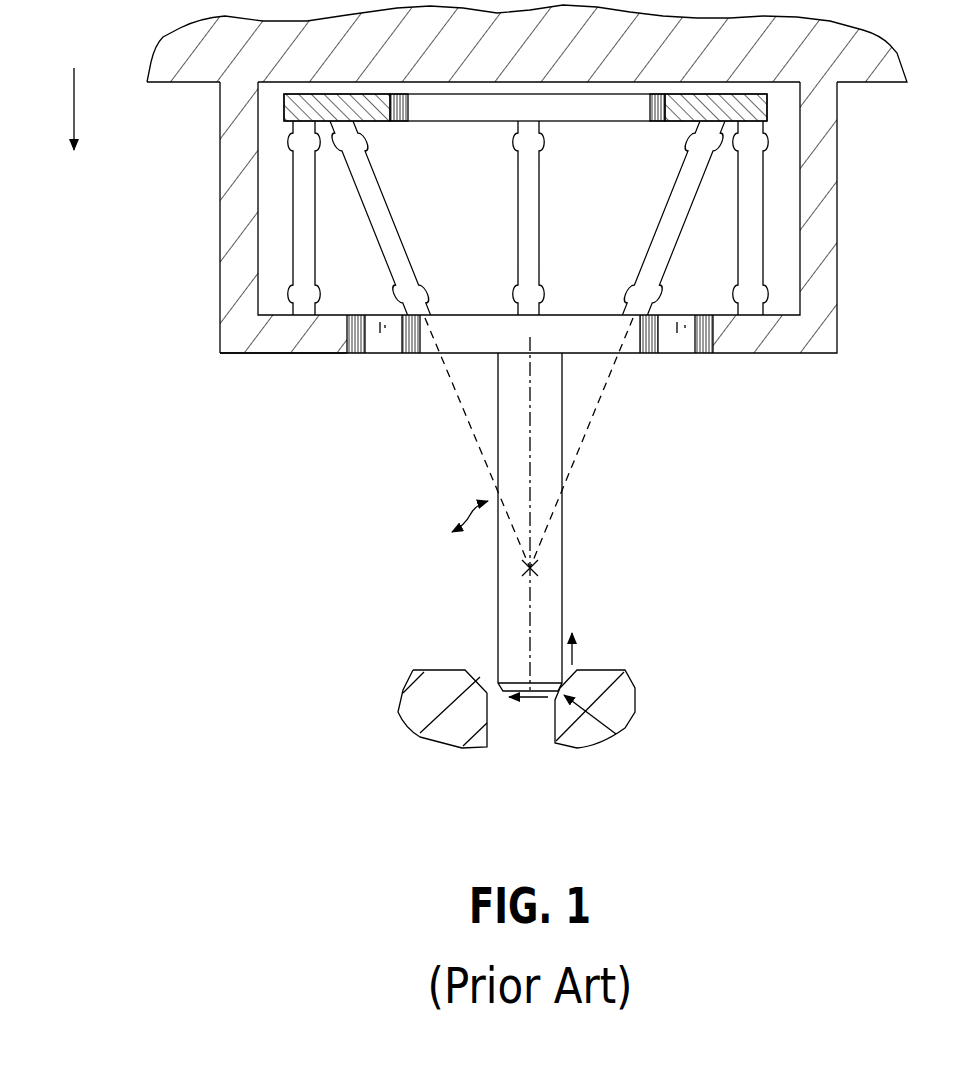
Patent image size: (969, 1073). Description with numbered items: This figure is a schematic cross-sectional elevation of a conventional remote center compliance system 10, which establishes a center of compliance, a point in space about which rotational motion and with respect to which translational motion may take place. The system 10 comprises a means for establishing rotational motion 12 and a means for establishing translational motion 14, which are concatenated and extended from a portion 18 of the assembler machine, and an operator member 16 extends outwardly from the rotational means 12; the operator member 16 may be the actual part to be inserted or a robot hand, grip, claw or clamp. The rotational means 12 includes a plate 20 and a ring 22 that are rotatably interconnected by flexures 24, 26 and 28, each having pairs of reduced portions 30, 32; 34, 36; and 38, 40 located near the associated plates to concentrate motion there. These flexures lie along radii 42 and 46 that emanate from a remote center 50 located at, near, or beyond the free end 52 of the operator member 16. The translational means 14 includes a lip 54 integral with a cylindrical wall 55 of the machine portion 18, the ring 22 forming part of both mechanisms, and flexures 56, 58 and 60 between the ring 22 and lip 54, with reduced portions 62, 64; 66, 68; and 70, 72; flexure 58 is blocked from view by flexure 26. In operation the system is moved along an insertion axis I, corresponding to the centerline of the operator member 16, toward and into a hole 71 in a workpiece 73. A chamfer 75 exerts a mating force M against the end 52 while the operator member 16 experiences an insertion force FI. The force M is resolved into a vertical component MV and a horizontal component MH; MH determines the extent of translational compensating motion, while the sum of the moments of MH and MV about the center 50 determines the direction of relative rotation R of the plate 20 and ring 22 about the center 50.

The remote center compliance system 10 is at (850, 486).
The means for establishing rotational motion 12 is at (389, 379).
The means for establishing translational motion 14 is at (496, 242).
The operator member 16 is at (551, 514).
The portion of the assembler machine 18 is at (167, 89).
The plate 20 is at (653, 348).
The ring 22 is at (770, 106).
The flexure 24 is at (413, 218).
The flexure 26 is at (523, 218).
The flexure 28 is at (642, 218).
The reduced portion 30 is at (353, 133).
The reduced portion 32 is at (418, 294).
The reduced portion 34 is at (541, 146).
The reduced portion 36 is at (541, 295).
The reduced portion 38 is at (702, 135).
The reduced portion 40 is at (613, 278).
The radius 42 is at (465, 410).
The radius 46 is at (598, 415).
The center 50 is at (527, 570).
The free end 52 is at (503, 633).
The lip 54 is at (273, 353).
The cylindrical wall 55 is at (222, 337).
The flexure 56 is at (237, 224).
The flexure 58 is at (482, 218).
The flexure 60 is at (814, 228).
The reduced portion 62 is at (294, 146).
The reduced portion 64 is at (295, 293).
The reduced portion 66 is at (516, 146).
The reduced portion 68 is at (516, 294).
The reduced portion 70 is at (762, 143).
The reduced portion 72 is at (762, 294).
The hole 71 is at (488, 738).
The workpiece 73 is at (441, 713).
The chamfer 75 is at (478, 673).
The insertion axis I is at (531, 473).
The relative rotation R is at (470, 499).
The mating force M is at (617, 736).
The vertical component of contact force MV is at (572, 660).
The horizontal component of contact force MH is at (526, 700).
The insertion force FI is at (53, 104).